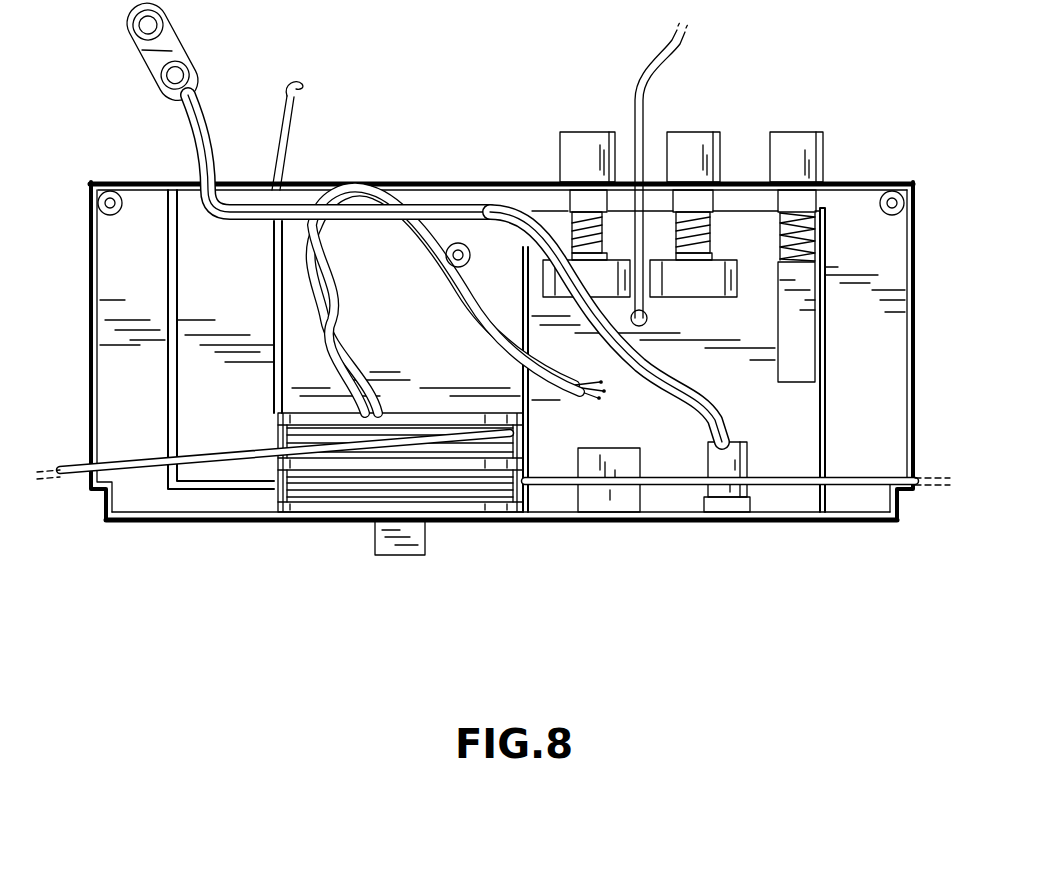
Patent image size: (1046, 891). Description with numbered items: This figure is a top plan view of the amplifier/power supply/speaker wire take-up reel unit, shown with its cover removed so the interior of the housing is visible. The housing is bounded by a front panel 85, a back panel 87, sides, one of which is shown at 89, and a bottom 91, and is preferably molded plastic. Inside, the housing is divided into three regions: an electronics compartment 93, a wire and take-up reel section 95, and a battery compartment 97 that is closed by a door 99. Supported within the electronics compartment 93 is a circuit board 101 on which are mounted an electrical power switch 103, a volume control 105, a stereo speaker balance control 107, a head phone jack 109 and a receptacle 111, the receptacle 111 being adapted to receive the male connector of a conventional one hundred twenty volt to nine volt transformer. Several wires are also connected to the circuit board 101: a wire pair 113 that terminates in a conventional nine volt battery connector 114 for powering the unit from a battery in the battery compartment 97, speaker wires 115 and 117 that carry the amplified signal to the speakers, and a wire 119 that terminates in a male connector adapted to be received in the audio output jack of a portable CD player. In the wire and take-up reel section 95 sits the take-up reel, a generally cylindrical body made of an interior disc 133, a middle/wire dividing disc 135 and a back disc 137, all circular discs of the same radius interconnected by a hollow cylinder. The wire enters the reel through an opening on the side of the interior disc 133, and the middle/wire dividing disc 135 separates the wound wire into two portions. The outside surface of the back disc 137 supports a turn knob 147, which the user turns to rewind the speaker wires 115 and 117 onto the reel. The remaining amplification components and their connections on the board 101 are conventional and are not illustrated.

The front panel 85 is at (742, 182).
The back panel 87 is at (677, 522).
The side 89 is at (89, 357).
The bottom 91 is at (443, 345).
The electronics compartment 93 is at (906, 394).
The wire and take-up reel section 95 is at (445, 232).
The battery compartment 97 is at (189, 362).
The door 99 is at (298, 106).
The circuit board 101 is at (742, 388).
The electrical power switch 103 is at (823, 150).
The volume control 105 is at (700, 131).
The stereo speaker balance control 107 is at (590, 131).
The head phone jack 109 is at (609, 522).
The receptacle 111 is at (726, 522).
The wire pair 113 is at (305, 210).
The 9 volt battery connector 114 is at (182, 32).
The speaker wire 115 is at (130, 474).
The speaker wire 117 is at (858, 482).
The wire 119 is at (642, 90).
The interior disc 133 is at (284, 420).
The middle/wire dividing disc 135 is at (312, 462).
The back disc 137 is at (300, 509).
The turn knob 147 is at (398, 556).